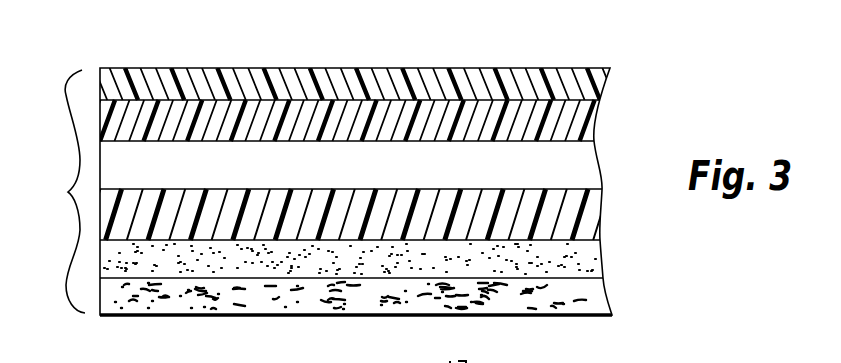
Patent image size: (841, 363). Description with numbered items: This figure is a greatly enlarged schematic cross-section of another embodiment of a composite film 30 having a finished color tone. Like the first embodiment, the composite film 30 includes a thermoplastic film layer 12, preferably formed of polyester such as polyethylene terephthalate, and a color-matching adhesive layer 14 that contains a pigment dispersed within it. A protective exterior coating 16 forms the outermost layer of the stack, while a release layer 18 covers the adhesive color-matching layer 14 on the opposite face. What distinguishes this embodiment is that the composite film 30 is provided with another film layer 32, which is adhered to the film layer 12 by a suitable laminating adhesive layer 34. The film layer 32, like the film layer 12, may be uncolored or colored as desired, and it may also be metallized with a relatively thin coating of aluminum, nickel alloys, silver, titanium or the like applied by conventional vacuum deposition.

The composite film 30 is at (57, 191).
The protective exterior coating 16 is at (552, 77).
The film layer 32 is at (583, 123).
The laminating adhesive layer 34 is at (350, 173).
The film layer 12 is at (585, 217).
The color-matching adhesive layer 14 is at (560, 260).
The release layer 18 is at (550, 302).